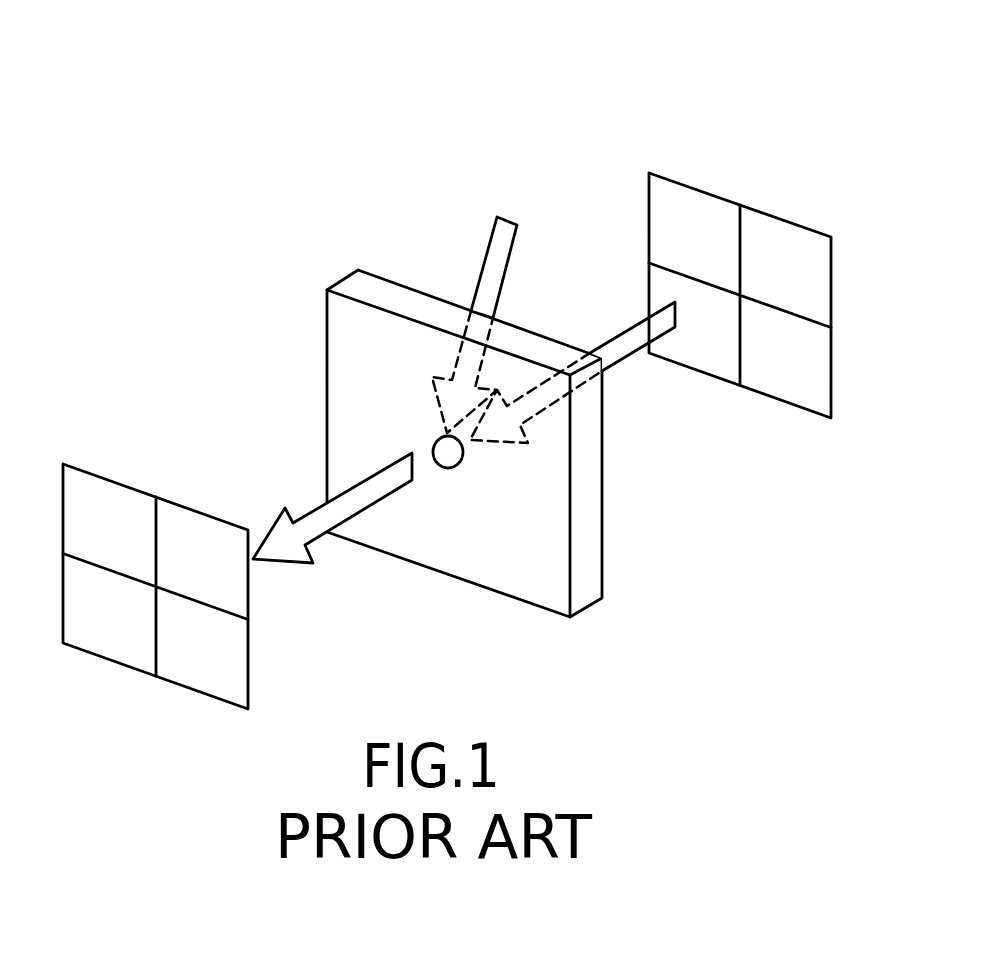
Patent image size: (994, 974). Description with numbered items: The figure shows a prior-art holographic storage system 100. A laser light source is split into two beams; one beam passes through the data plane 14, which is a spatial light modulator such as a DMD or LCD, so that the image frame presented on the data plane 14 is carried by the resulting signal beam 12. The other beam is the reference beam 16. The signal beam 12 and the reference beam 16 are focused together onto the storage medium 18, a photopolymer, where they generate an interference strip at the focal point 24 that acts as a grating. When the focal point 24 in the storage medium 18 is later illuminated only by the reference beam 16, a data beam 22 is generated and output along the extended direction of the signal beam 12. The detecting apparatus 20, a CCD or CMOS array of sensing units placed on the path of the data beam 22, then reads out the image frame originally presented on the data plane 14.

The holographic storage system 100 is at (557, 117).
The signal beam 12 is at (625, 328).
The data plane 14 is at (717, 195).
The reference beam 16 is at (483, 268).
The storage medium 18 is at (592, 607).
The detecting apparatus 20 is at (130, 487).
The data beam 22 is at (353, 488).
The focal point 24 is at (440, 433).